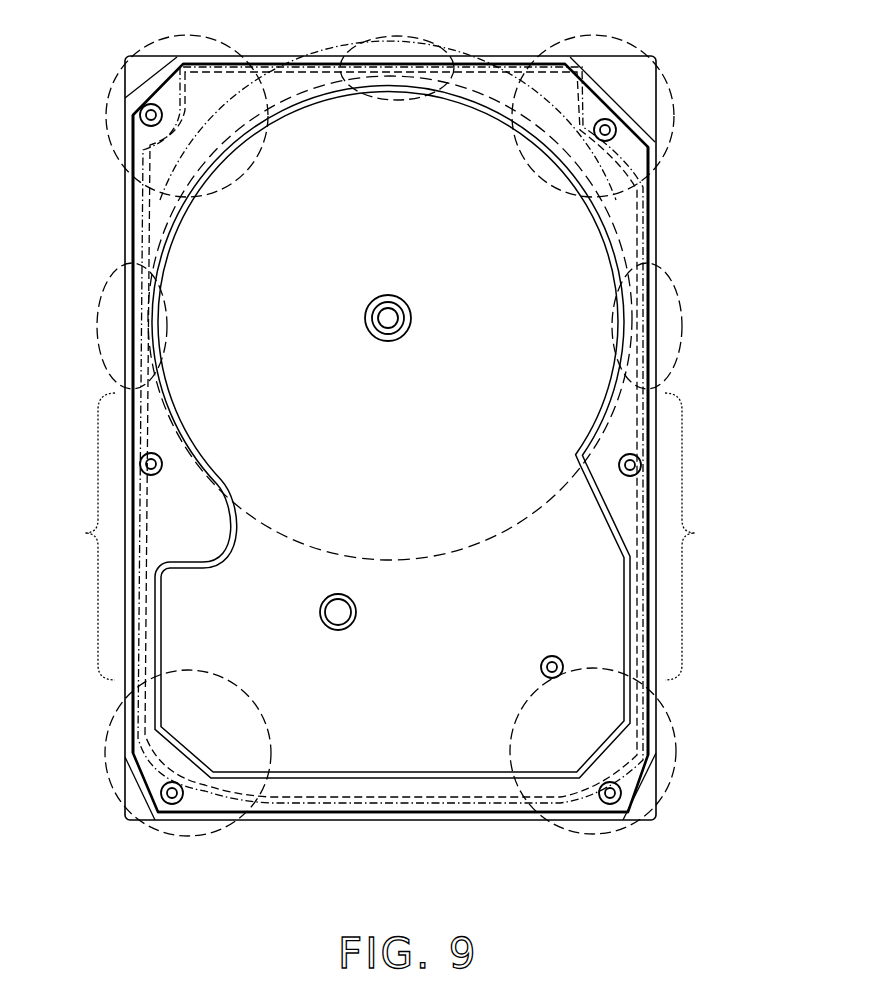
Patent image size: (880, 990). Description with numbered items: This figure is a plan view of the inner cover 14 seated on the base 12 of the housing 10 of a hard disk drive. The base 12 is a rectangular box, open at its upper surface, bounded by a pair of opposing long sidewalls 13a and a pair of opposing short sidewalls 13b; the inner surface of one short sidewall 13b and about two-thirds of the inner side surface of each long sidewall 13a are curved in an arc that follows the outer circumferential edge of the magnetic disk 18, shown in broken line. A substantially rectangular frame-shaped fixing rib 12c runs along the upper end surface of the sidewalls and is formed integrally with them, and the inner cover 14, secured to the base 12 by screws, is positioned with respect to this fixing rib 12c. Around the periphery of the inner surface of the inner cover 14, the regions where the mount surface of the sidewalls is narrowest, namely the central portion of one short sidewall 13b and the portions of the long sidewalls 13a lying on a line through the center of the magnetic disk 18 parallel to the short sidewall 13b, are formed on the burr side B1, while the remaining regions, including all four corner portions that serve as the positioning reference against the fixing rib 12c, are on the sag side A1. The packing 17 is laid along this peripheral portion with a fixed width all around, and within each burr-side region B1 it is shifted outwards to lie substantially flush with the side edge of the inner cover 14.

The housing 10 is at (396, 454).
The base 12 is at (460, 821).
The fixing rib 12c is at (656, 190).
The long sidewalls 13a is at (125, 390).
The short sidewalls 13b is at (288, 57).
The inner cover 14 is at (315, 748).
The packing 17 is at (498, 58).
The magnetic disk 18 is at (519, 541).
The sag side A1 is at (186, 37).
The burr side B1 is at (400, 37).